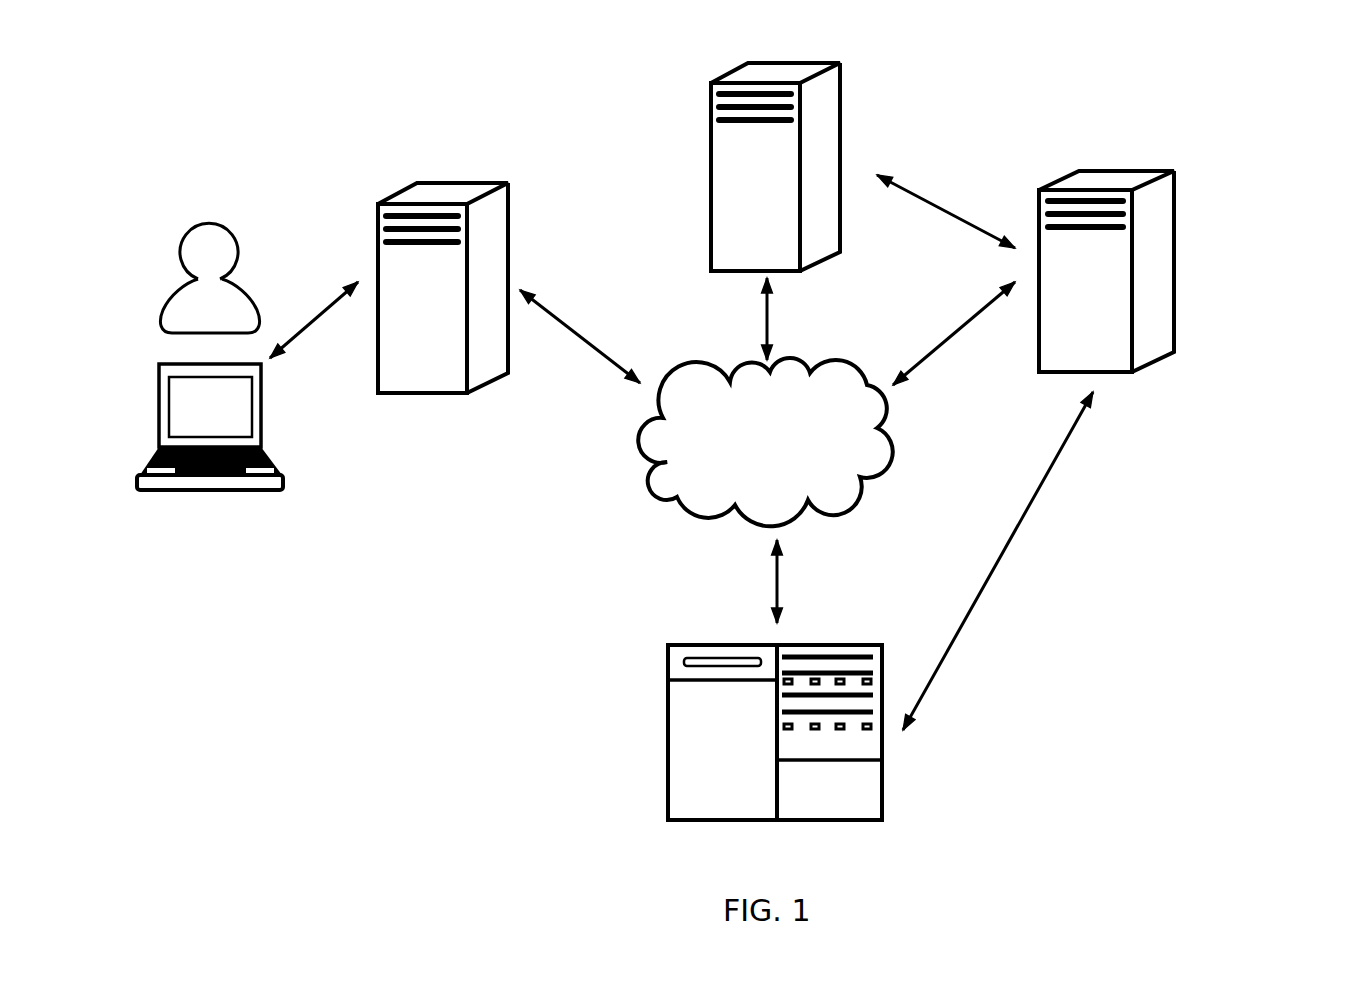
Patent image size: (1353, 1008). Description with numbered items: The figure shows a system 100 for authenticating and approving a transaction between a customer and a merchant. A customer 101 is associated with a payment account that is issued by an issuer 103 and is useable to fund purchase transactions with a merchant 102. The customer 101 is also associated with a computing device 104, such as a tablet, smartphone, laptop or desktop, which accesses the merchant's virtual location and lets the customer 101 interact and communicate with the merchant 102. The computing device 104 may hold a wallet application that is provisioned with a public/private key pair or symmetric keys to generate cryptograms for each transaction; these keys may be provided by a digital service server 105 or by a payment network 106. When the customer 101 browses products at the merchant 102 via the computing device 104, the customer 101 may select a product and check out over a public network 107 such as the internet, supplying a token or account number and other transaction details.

The system 100 is at (1263, 55).
The customer 101 is at (208, 223).
The merchant 102 is at (458, 192).
The issuer 103 is at (1143, 172).
The computing device 104 is at (208, 492).
The digital service server 105 is at (842, 150).
The payment network 106 is at (816, 643).
The public network 107 is at (895, 445).